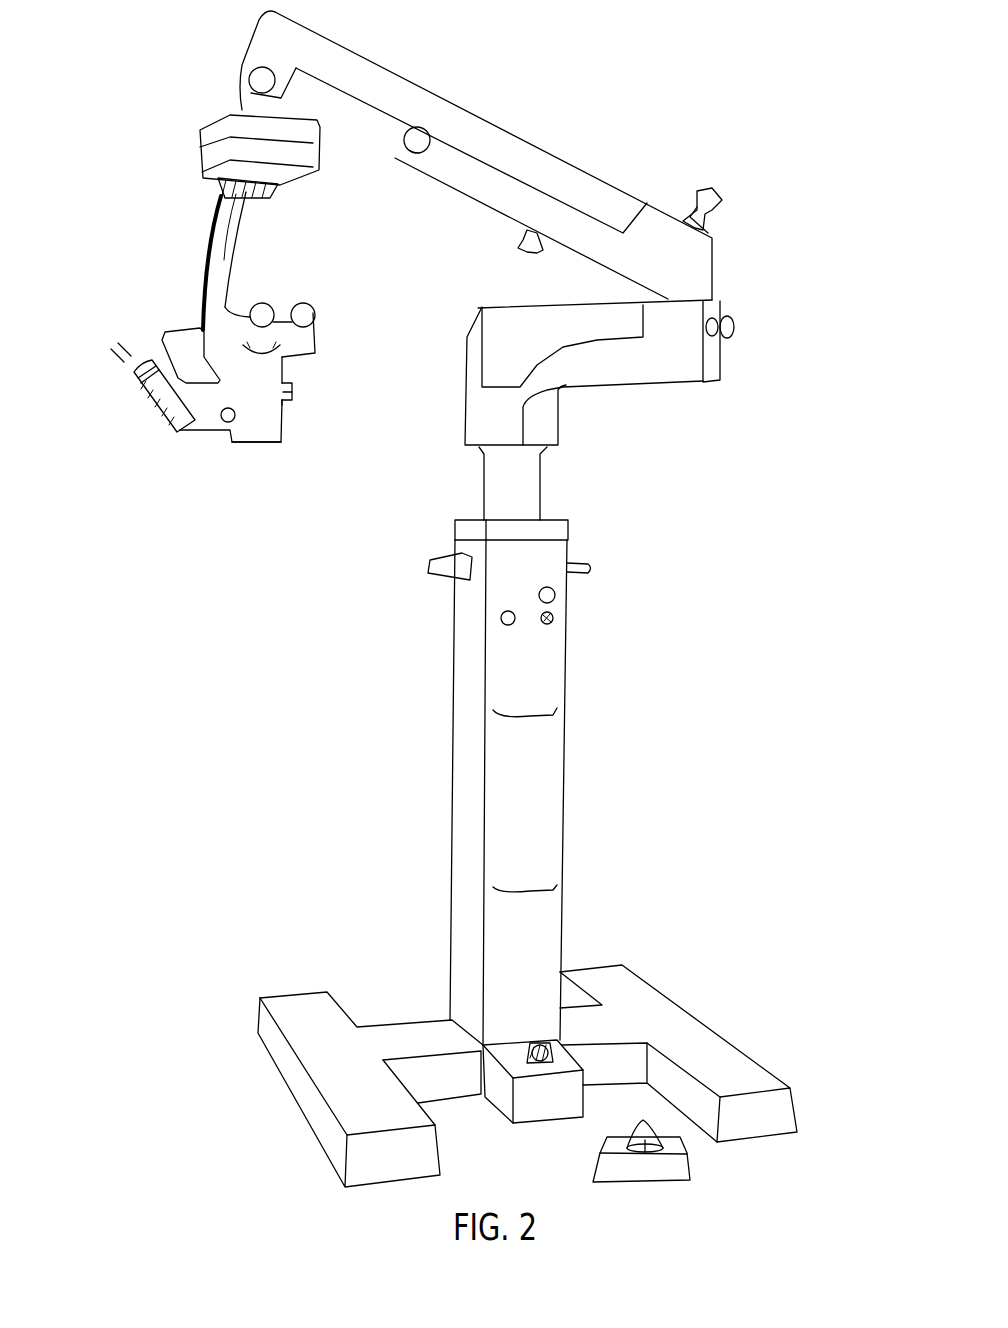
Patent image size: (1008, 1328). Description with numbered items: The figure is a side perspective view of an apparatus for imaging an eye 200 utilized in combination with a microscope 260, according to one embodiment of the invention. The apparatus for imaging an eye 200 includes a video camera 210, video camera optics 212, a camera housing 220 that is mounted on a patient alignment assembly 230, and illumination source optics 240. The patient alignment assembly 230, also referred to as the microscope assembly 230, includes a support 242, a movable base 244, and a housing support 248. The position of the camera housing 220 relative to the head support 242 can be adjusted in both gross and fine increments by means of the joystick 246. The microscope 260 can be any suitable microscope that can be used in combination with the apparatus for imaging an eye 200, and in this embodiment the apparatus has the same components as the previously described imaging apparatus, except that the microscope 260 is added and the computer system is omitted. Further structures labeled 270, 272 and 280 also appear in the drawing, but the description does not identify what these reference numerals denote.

The apparatus for imaging an eye 200 is at (143, 247).
The video camera 210 is at (315, 342).
The video camera optics 212 is at (272, 389).
The camera housing 220 is at (285, 377).
The illumination source optics 240 is at (365, 352).
The support 242 is at (290, 405).
The movable base 244 is at (289, 468).
The joystick 246 is at (645, 1155).
The housing support 248 is at (229, 266).
The microscope 260 is at (110, 362).
The patient alignment assembly 230 is at (722, 1178).
The base 270 is at (680, 1005).
The column 272 is at (540, 776).
The swing arm 280 is at (647, 173).